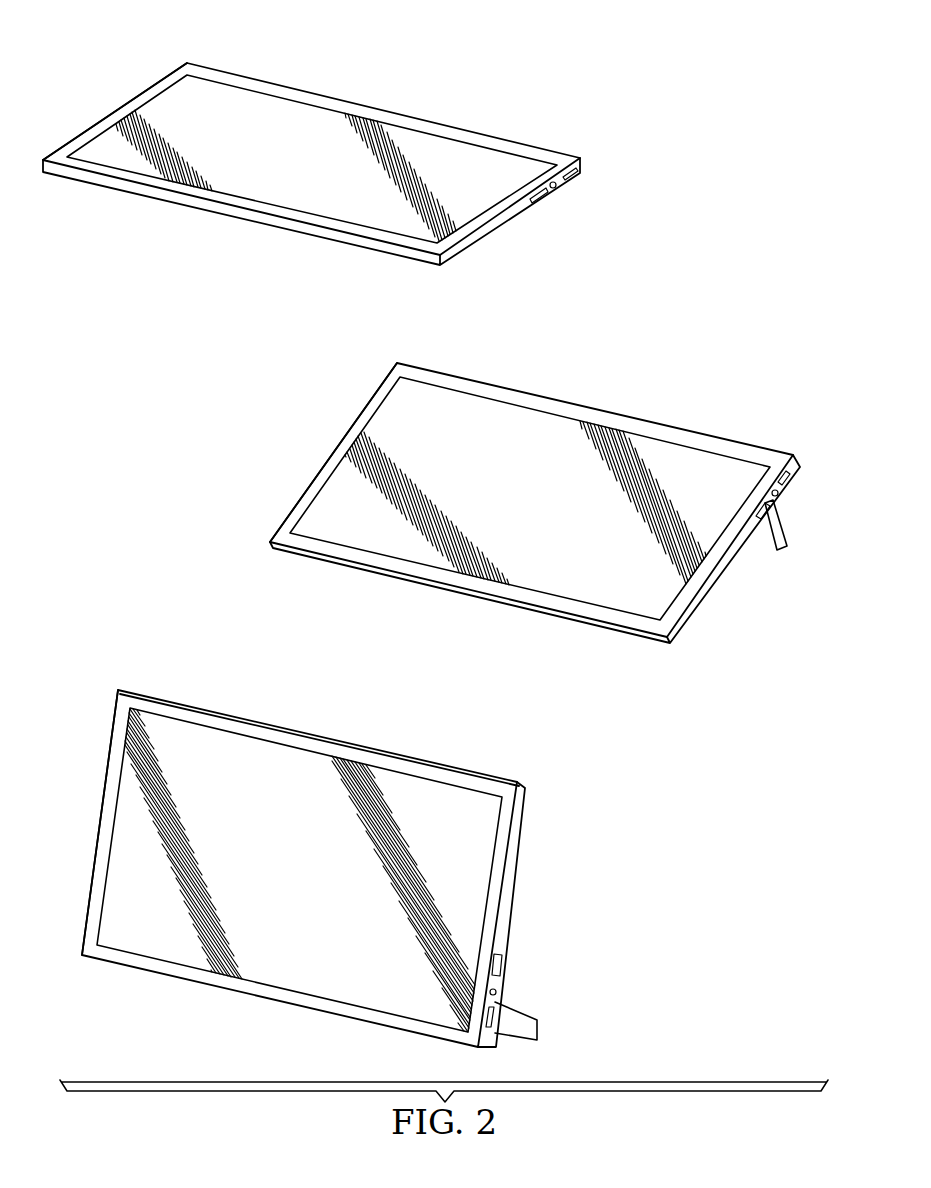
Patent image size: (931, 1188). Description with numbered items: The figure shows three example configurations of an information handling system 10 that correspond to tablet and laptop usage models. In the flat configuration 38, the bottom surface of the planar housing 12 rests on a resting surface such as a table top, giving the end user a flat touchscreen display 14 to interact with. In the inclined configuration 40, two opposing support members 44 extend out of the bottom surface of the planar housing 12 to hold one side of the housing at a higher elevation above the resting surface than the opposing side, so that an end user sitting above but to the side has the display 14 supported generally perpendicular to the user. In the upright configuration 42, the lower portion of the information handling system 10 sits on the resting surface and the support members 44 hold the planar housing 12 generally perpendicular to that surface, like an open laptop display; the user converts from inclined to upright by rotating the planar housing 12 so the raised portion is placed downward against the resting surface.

The information handling system 10 is at (370, 70).
The planar housing 12 is at (477, 140).
The touchscreen display 14 is at (278, 113).
The flat configuration 38 is at (108, 113).
The inclined configuration 40 is at (330, 452).
The upright configuration 42 is at (98, 818).
The support members 44 is at (782, 530).